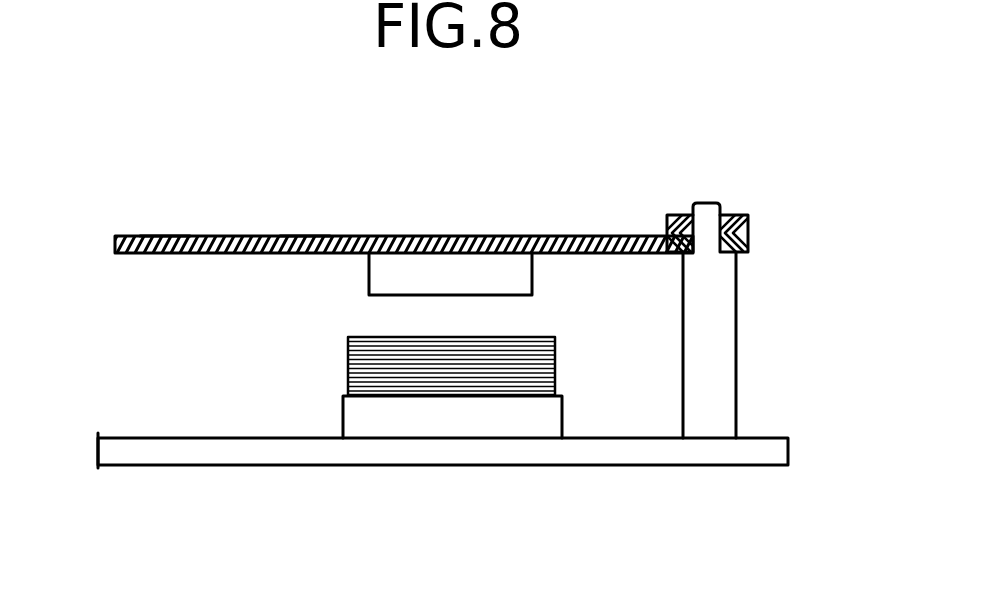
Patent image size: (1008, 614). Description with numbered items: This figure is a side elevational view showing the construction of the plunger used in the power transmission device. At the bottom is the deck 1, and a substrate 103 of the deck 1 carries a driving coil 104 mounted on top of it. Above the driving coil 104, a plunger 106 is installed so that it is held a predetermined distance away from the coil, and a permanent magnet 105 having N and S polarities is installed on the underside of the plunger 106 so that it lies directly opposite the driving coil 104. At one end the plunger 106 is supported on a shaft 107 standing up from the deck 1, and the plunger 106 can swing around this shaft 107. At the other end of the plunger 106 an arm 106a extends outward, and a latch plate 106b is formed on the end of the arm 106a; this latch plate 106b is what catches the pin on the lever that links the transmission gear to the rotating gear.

The deck 1 is at (122, 453).
The substrate 103 is at (353, 417).
The driving coil 104 is at (350, 377).
The permanent magnet 105 is at (477, 268).
The plunger 106 is at (602, 237).
The arm 106a is at (303, 237).
The latch plate 106b is at (163, 237).
The shaft 107 is at (722, 340).